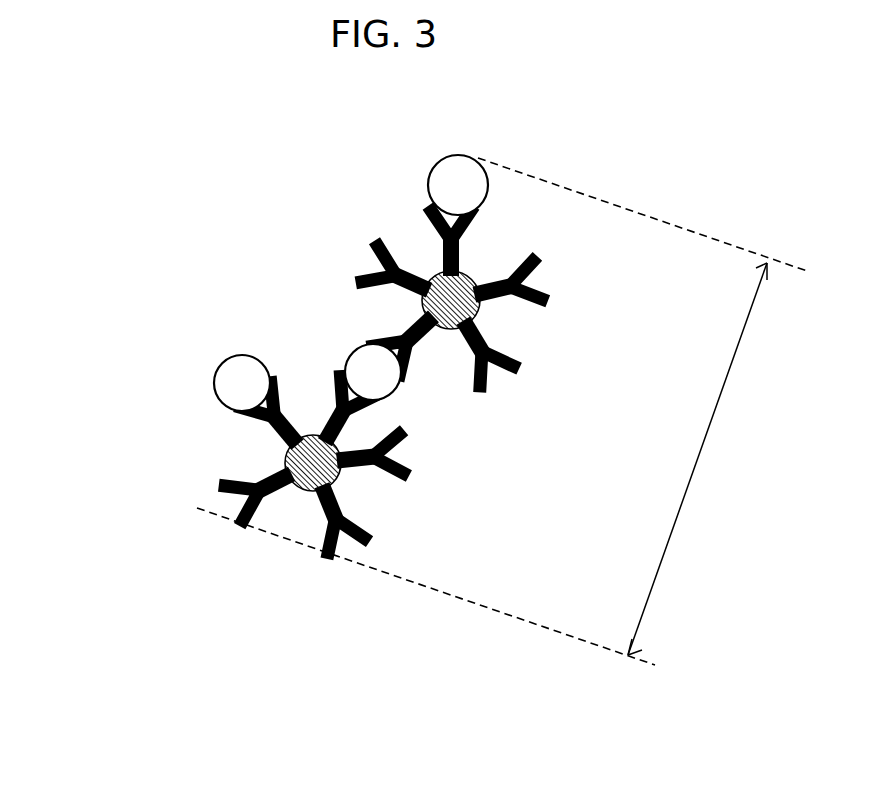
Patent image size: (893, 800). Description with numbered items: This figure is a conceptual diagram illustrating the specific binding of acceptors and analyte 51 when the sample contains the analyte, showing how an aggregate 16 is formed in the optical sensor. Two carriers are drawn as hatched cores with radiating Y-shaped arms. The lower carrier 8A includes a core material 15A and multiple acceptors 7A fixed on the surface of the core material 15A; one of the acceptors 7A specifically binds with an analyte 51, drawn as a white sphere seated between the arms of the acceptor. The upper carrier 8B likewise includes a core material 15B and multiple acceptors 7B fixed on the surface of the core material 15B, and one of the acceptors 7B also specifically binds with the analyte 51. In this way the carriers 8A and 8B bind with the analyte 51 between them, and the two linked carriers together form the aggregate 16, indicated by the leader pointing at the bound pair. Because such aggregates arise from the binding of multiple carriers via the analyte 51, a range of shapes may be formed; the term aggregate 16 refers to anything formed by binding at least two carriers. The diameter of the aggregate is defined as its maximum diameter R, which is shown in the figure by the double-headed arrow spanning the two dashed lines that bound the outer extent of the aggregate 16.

The aggregate 16 is at (120, 235).
The maximum diameter R is at (697, 459).
The carrier 8B is at (266, 146).
The acceptor 7B is at (382, 342).
The core material 15B is at (433, 273).
The carrier 8A is at (545, 425).
The acceptor 7A is at (355, 407).
The core material 15A is at (340, 477).
The analyte 51 is at (345, 360).